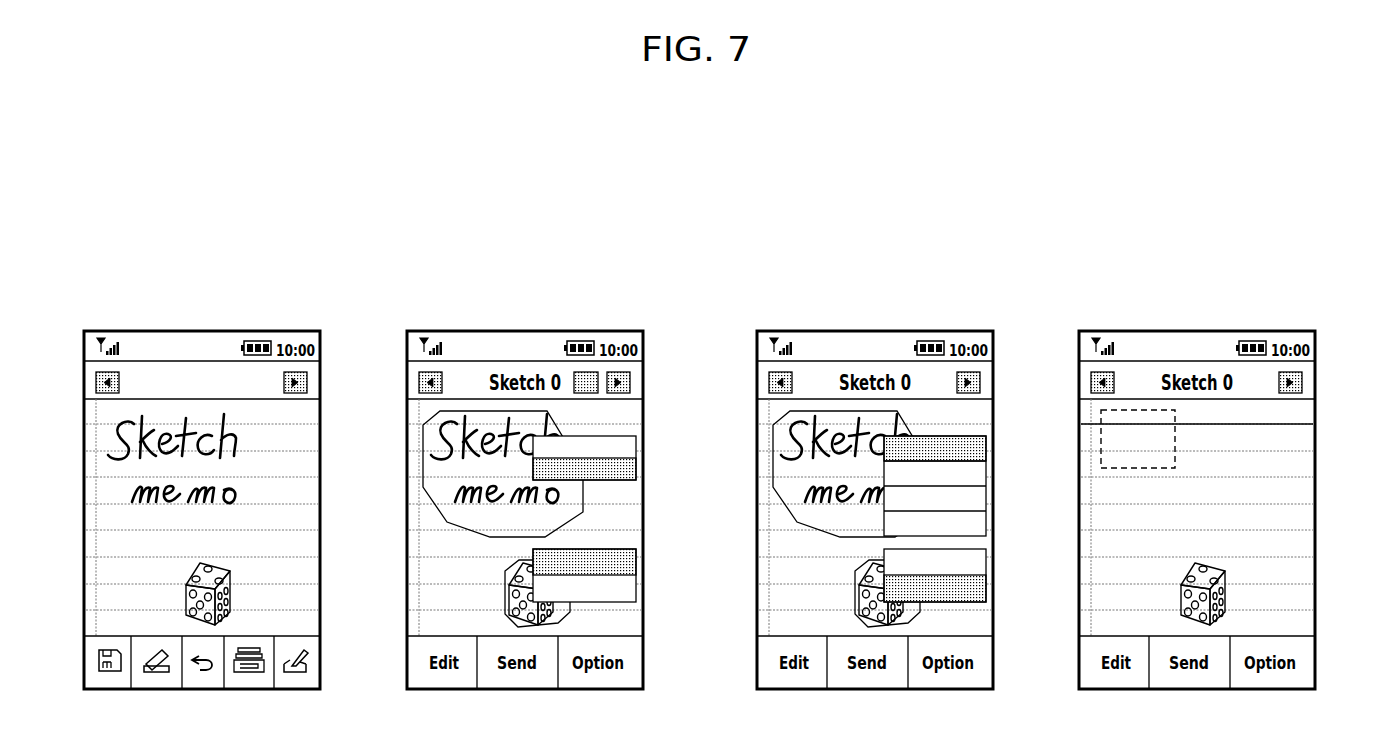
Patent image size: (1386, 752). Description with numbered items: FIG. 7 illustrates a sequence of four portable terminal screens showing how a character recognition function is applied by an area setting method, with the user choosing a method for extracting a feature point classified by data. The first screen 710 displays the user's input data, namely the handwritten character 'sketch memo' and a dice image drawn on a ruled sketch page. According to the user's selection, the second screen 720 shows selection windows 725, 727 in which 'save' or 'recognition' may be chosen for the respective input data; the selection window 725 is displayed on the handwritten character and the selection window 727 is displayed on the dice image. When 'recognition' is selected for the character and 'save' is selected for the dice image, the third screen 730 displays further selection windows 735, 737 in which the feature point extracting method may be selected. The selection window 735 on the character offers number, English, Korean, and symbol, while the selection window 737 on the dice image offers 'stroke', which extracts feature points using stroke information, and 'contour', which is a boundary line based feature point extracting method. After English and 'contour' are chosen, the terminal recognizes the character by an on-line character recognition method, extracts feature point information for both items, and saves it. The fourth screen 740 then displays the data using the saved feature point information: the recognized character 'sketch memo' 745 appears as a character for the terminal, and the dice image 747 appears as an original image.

The screen 710 is at (287, 331).
The screen 720 is at (609, 331).
The selection window 725 is at (609, 428).
The selection window 727 is at (608, 550).
The screen 730 is at (960, 331).
The selection window 735 is at (968, 484).
The selection window 737 is at (968, 575).
The screen 740 is at (1273, 331).
The character 'sketch memo' 745 is at (1229, 439).
The dice image 747 is at (1269, 594).